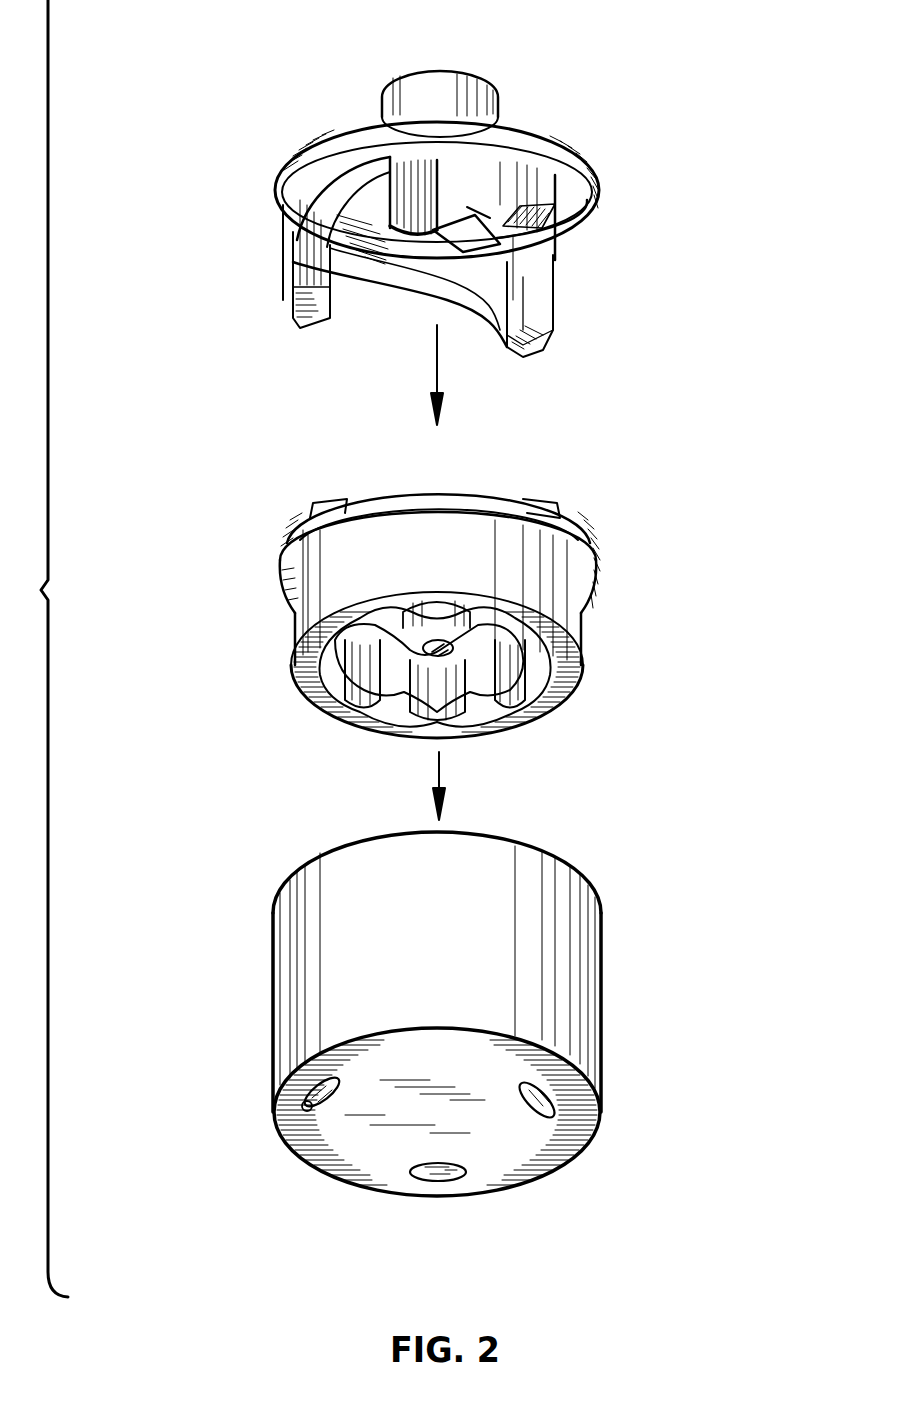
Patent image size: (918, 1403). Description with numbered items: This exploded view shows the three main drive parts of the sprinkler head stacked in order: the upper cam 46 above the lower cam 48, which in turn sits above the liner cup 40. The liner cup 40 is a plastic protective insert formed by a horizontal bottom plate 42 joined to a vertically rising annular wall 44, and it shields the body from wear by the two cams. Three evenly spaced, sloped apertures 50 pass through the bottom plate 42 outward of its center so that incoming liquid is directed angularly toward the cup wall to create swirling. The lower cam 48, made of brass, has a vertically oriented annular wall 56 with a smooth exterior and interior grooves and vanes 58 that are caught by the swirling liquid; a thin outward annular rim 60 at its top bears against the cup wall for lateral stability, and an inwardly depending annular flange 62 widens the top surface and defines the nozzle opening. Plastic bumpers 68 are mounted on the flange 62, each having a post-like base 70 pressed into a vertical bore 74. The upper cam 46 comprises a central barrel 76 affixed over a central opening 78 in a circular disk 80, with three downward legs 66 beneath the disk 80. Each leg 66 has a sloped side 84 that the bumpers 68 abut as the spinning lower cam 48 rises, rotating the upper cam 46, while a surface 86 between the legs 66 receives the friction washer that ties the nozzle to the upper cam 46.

The liner cup 40 is at (483, 1049).
The bottom plate 42 is at (578, 1152).
The annular wall 44 is at (577, 975).
The upper cam 46 is at (447, 209).
The lower cam 48 is at (436, 609).
The apertures 50 is at (450, 1163).
The annular wall 56 is at (343, 568).
The grooves and vanes 58 is at (333, 673).
The annular rim 60 is at (583, 557).
The annular flange 62 is at (460, 493).
The legs 66 is at (297, 320).
The bumpers 68 is at (312, 503).
The post-like base 70 is at (440, 650).
The vertical bore 74 is at (445, 650).
The central barrel 76 is at (477, 70).
The central opening 78 is at (417, 212).
The circular disk 80 is at (553, 140).
The sloped side 84 is at (317, 262).
The surface 86 is at (378, 238).